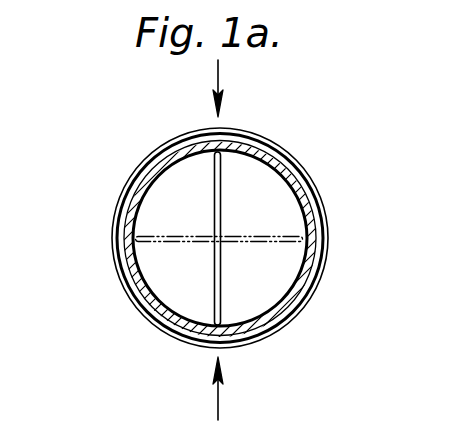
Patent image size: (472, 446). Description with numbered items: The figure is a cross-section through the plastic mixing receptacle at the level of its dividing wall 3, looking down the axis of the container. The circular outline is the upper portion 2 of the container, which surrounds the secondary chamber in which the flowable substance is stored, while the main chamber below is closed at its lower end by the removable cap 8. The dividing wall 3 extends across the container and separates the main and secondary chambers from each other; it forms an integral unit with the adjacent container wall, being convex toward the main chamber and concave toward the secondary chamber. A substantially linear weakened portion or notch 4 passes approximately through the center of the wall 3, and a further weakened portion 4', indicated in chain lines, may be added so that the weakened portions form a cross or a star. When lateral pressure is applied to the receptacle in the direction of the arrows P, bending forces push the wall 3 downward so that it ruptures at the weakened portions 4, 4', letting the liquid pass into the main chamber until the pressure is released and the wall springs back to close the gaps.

The upper portion 2 is at (320, 293).
The cap 8 is at (268, 334).
The dividing wall 3 is at (253, 198).
The weakened portion 4 is at (149, 232).
The additional weakened portion 4' is at (182, 277).
The arrows P is at (222, 78).